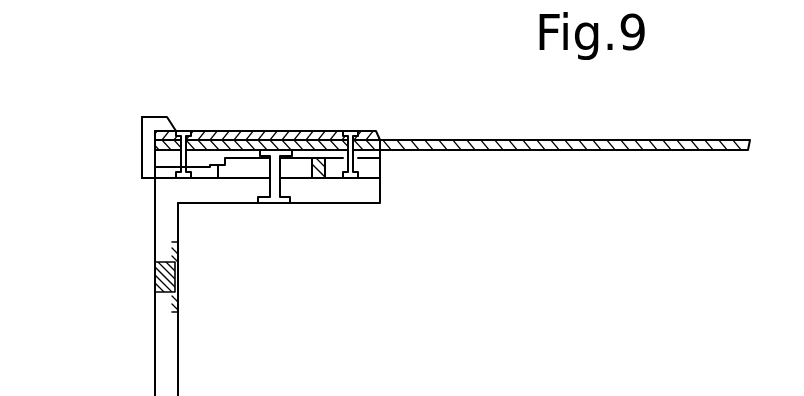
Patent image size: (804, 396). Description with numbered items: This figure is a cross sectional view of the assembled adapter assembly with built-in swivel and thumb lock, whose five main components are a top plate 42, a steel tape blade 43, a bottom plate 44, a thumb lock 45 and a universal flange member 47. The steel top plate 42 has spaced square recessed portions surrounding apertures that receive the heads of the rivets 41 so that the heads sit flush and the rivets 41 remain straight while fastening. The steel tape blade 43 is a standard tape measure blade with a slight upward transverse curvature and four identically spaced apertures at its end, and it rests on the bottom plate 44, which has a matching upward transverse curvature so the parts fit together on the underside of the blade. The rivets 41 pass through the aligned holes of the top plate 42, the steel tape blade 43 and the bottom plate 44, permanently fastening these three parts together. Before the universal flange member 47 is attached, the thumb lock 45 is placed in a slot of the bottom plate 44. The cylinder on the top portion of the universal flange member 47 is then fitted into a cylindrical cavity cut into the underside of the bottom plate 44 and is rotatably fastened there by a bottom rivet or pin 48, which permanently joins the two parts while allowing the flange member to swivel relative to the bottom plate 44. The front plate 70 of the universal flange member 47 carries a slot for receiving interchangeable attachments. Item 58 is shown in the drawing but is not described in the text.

The rivets 41 is at (187, 131).
The top plate 42 is at (380, 131).
The steel tape blade 43 is at (590, 150).
The bottom plate 44 is at (383, 164).
The thumb lock 45 is at (142, 153).
The universal flange member 47 is at (368, 203).
The bottom rivet or pin 48 is at (277, 203).
The end cap 58 is at (166, 118).
The front plate 70 is at (156, 367).